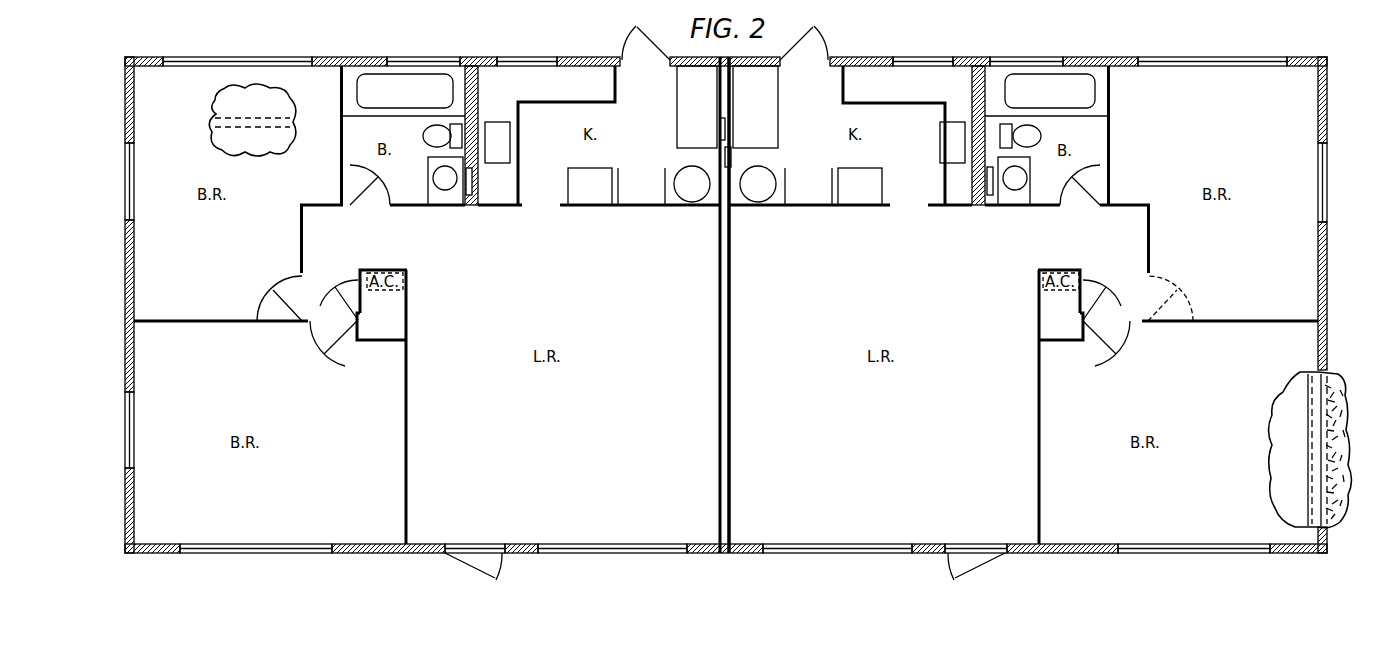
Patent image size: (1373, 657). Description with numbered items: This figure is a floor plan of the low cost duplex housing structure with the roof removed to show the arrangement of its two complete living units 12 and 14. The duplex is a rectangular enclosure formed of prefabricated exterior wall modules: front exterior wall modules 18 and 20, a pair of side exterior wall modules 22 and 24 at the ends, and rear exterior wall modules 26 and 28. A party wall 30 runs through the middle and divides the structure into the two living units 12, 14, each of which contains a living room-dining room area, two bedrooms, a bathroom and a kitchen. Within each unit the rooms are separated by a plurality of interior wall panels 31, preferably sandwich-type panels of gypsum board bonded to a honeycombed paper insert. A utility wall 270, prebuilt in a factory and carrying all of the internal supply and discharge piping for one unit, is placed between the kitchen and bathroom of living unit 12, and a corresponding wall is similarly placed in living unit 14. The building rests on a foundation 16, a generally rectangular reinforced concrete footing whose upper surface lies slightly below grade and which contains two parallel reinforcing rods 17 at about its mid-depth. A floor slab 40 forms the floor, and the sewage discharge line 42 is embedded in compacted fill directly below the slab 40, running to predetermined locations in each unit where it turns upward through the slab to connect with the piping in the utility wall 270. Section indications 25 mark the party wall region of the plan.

The living unit 12 is at (898, 419).
The living unit 14 is at (568, 419).
The foundation 16 is at (1308, 421).
The reinforcing rods 17 is at (1327, 460).
The front exterior wall module 18 is at (1091, 561).
The front exterior wall module 20 is at (478, 36).
The side exterior wall module 22 is at (118, 261).
The side exterior wall module 24 is at (1332, 265).
The section line 25 is at (718, 352).
The rear exterior wall module 26 is at (360, 52).
The rear exterior wall module 28 is at (1129, 52).
The party wall 30 is at (741, 286).
The interior wall panels 31 is at (193, 322).
The floor slab 40 is at (258, 102).
The sewage discharge line 42 is at (262, 128).
The utility wall 270 is at (493, 101).